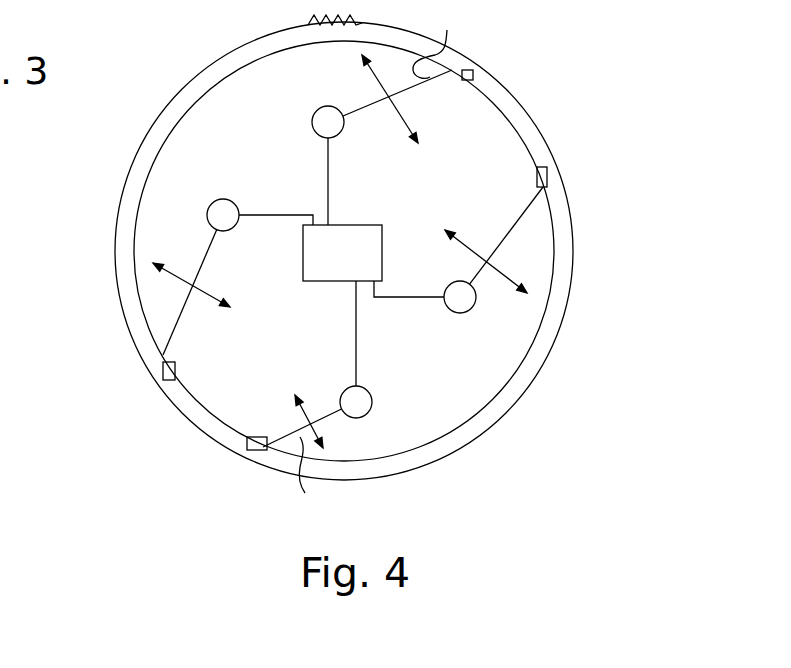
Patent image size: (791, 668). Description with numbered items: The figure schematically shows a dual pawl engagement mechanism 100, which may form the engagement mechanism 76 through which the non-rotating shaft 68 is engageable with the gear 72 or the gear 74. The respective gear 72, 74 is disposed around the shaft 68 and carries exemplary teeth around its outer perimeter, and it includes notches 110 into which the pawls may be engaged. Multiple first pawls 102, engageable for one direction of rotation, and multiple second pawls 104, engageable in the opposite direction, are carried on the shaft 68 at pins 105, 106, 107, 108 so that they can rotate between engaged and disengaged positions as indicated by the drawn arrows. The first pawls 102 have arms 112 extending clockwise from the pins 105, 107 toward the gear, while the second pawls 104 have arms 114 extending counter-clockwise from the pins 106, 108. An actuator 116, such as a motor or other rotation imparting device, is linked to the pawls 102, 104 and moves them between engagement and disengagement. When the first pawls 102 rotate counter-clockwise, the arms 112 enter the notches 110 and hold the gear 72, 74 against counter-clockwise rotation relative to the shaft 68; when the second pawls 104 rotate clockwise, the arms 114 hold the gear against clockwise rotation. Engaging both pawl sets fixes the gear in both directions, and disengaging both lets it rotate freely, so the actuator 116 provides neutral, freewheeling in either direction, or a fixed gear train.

The dual pawl engagement mechanism 100 is at (100, 325).
The gear 72 is at (242, 60).
The gear 74 is at (344, 251).
The engagement mechanism 76 is at (341, 20).
The shaft 68 is at (287, 175).
The actuator 116 is at (341, 262).
The pin 105 is at (328, 119).
The pin 108 is at (223, 213).
The pin 106 is at (463, 302).
The pin 107 is at (372, 400).
The second pawls 104 is at (518, 220).
The first pawls 102 is at (367, 107).
The arms 114 is at (182, 313).
The notches 110 is at (470, 78).
The arms 112 is at (383, 263).